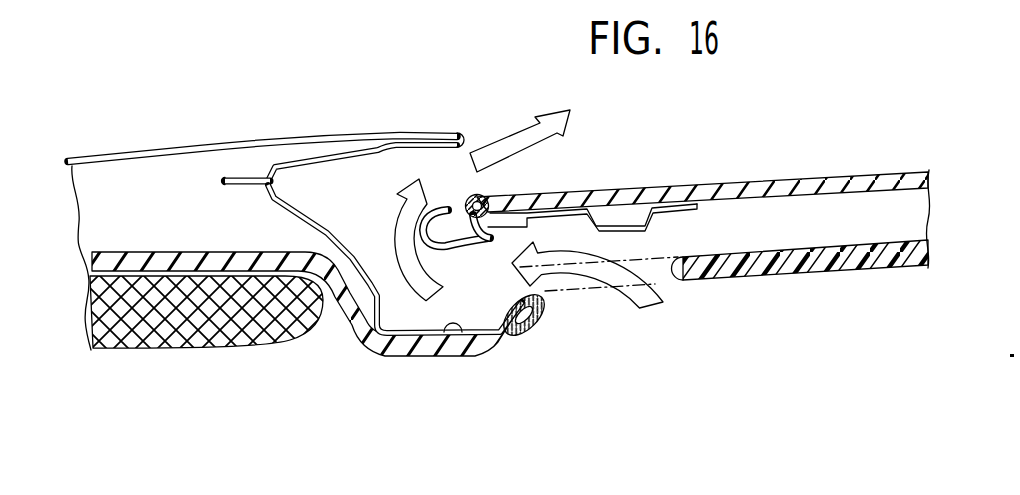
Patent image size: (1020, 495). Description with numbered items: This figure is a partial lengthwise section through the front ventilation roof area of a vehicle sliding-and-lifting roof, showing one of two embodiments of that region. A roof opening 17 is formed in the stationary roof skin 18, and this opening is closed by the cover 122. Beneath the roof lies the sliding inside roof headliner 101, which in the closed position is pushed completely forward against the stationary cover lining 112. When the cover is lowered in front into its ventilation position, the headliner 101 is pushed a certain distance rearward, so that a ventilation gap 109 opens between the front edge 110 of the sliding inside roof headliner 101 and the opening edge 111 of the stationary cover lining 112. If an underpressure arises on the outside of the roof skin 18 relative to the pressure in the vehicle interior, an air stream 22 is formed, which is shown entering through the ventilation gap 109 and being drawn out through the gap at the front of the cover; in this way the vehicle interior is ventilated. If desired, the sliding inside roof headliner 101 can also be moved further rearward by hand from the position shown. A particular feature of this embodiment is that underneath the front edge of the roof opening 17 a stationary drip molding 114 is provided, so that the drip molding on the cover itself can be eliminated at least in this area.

The stationary roof skin 18 is at (204, 144).
The air stream 22 is at (397, 215).
The roof opening 17 is at (642, 147).
The cover 122 is at (804, 188).
The sliding inside roof headliner 101 is at (862, 262).
The front edge of sliding inside roof headliner 110 is at (690, 273).
The ventilation gap 109 is at (608, 298).
The opening edge of stationary cover lining 111 is at (543, 322).
The stationary cover lining 112 is at (391, 355).
The stationary drip molding 114 is at (460, 342).